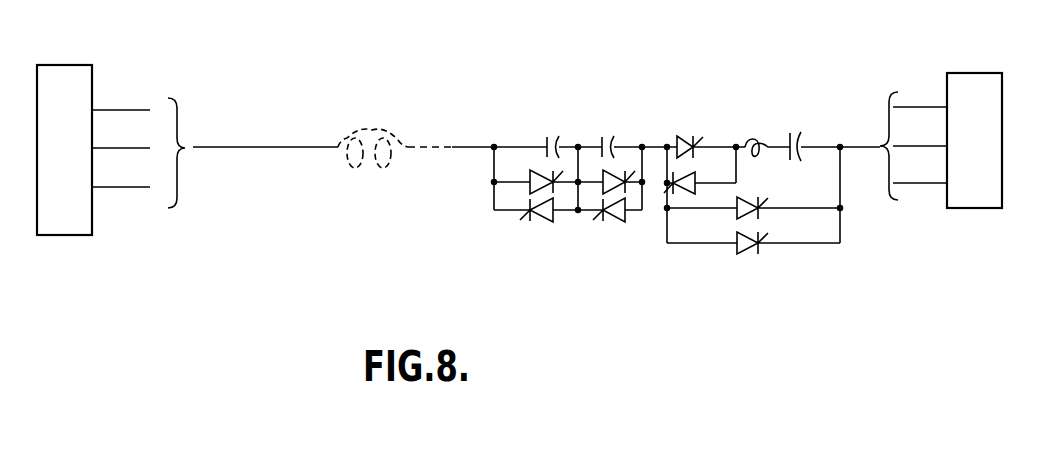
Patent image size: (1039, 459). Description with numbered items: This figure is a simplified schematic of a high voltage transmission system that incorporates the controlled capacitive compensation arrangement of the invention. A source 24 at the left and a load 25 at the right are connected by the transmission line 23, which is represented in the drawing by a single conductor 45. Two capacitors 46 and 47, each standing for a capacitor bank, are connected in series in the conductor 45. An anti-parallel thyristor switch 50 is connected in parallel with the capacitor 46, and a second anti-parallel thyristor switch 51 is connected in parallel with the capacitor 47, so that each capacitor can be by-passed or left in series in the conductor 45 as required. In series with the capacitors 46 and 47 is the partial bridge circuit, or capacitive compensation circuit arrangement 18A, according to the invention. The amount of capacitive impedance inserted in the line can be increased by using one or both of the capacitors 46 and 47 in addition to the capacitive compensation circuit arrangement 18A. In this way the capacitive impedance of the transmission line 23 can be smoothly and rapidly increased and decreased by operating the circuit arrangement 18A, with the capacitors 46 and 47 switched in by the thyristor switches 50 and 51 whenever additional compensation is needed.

The source 24 is at (42, 65).
The load 25 is at (955, 73).
The transmission line 23 is at (285, 122).
The single conductor 45 is at (494, 147).
The capacitor 46 is at (540, 145).
The capacitor 47 is at (596, 145).
The anti-parallel thyristor switch 50 is at (532, 190).
The anti-parallel thyristor switch 51 is at (600, 190).
The capacitive compensation circuit arrangement 18A is at (812, 309).